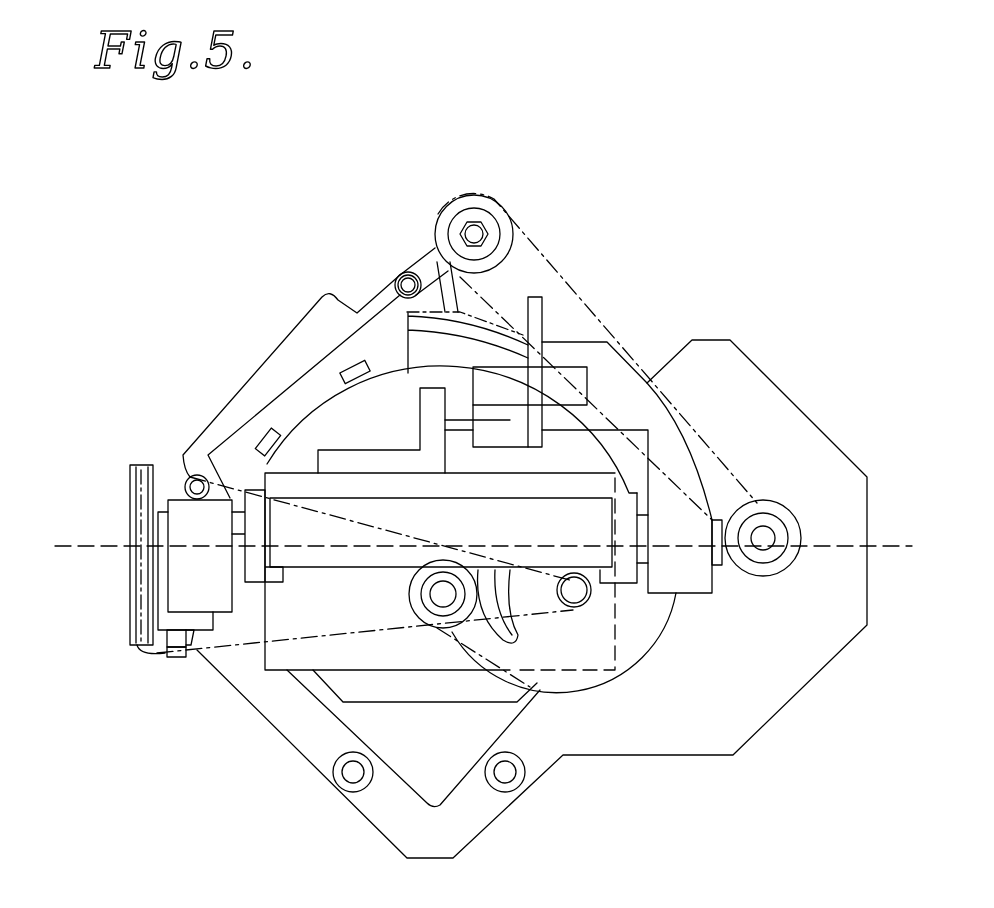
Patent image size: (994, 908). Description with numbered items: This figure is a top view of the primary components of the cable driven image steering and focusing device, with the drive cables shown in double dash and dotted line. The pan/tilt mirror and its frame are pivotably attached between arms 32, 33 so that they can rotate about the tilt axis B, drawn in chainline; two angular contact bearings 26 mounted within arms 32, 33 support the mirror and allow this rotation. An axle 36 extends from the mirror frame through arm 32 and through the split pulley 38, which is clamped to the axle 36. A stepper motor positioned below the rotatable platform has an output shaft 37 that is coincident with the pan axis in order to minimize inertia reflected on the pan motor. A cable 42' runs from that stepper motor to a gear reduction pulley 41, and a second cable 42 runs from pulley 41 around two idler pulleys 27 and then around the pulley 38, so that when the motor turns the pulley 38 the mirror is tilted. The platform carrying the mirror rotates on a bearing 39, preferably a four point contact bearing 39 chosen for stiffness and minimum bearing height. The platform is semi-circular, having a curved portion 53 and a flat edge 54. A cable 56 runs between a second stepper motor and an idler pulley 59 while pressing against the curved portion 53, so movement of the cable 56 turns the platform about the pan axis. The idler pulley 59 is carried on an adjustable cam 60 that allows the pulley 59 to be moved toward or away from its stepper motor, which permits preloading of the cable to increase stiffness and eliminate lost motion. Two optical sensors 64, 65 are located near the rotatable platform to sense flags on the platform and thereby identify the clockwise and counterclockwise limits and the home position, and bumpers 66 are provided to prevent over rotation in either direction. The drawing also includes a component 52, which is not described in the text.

The angular contact bearings 26 is at (727, 568).
The idler pulleys 27 is at (192, 476).
The arm 32 is at (216, 596).
The arm 33 is at (695, 592).
The axle 36 is at (237, 553).
The output shaft 37 is at (443, 587).
The split pulley 38 is at (133, 508).
The bearing 39 is at (412, 612).
The gear reduction pulley 41 is at (628, 653).
The cable 42 is at (452, 404).
The cable 42' is at (555, 657).
The pulley 52 is at (765, 553).
The curved portion 53 is at (423, 242).
The flat edge 54 is at (338, 657).
The cable 56 is at (610, 327).
The idler pulley 59 is at (507, 250).
The adjustable cam 60 is at (395, 279).
The optical sensor 64 is at (262, 443).
The optical sensor 65 is at (343, 373).
The bumpers 66 is at (337, 787).
The tilt axis B is at (90, 548).